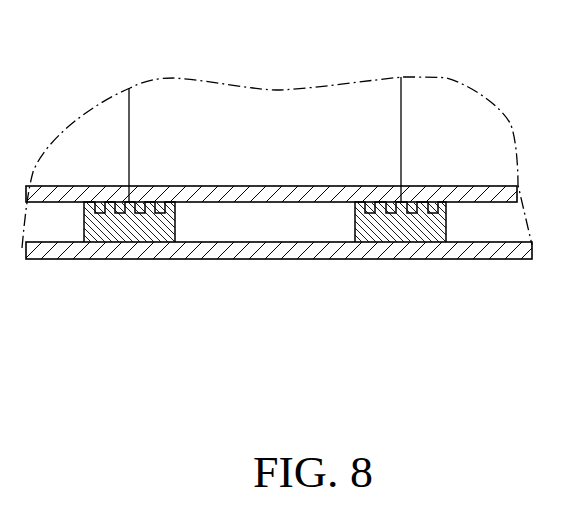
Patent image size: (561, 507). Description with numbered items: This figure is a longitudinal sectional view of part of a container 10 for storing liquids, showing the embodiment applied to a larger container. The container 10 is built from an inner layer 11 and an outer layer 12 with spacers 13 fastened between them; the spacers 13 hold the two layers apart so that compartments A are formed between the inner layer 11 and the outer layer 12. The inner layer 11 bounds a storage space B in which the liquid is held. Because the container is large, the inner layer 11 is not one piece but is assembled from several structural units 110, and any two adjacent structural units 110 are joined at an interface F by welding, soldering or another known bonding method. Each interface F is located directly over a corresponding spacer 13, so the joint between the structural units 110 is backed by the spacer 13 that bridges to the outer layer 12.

The container 10 is at (273, 192).
The inner layer 11 is at (287, 186).
The structural unit 110 is at (80, 186).
The outer layer 12 is at (337, 252).
The spacer 13 is at (165, 228).
The compartment A is at (277, 230).
The storage space B is at (366, 123).
The interface F is at (135, 186).